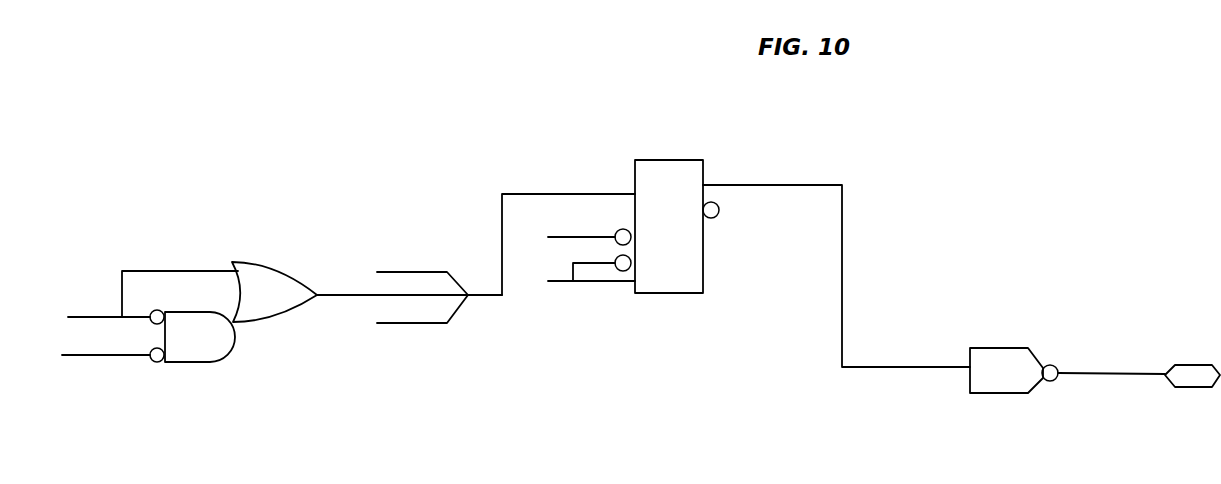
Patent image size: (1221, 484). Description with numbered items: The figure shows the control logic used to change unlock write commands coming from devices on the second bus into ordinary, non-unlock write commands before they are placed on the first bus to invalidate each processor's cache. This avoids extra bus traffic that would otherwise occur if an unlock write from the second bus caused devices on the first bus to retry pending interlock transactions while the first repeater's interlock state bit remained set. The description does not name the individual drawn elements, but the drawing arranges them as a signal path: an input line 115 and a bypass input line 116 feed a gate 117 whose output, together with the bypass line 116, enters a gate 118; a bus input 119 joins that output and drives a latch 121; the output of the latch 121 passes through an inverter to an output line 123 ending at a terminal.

The input signal line 115 is at (125, 357).
The bypass input line 116 is at (143, 268).
The AND gate 117 is at (220, 352).
The OR gate 118 is at (297, 273).
The bus input signal 119 is at (380, 298).
The flip-flop 121 is at (665, 180).
The output line 123 is at (1104, 379).